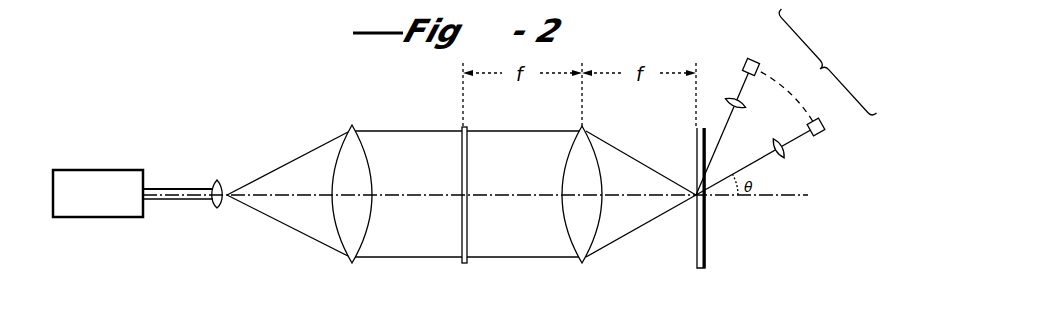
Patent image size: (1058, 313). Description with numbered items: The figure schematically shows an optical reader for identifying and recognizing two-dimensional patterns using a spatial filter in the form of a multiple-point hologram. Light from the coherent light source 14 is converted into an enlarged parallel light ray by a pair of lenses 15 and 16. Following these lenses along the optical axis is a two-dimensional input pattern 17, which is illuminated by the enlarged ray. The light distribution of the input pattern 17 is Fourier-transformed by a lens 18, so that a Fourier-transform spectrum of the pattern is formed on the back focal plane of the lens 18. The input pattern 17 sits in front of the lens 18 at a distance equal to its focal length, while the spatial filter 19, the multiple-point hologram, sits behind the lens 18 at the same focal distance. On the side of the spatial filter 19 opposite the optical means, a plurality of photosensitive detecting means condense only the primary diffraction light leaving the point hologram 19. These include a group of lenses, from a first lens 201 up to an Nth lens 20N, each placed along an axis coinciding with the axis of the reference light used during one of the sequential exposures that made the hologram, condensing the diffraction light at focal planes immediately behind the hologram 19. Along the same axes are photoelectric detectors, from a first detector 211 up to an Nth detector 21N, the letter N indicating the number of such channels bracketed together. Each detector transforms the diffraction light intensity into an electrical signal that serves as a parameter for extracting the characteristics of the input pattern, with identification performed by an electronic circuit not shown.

The coherent light source 14 is at (107, 208).
The lens 15 is at (218, 208).
The lens 16 is at (353, 263).
The two-dimensional input pattern 17 is at (466, 263).
The lens 18 is at (584, 263).
The spatial filter 19 is at (707, 261).
The lens 20N is at (758, 102).
The photoelectric detector 21N is at (757, 61).
The lens 201 is at (782, 157).
The photoelectric detector 211 is at (823, 131).
The plurality of photosensitive detecting means N is at (825, 65).